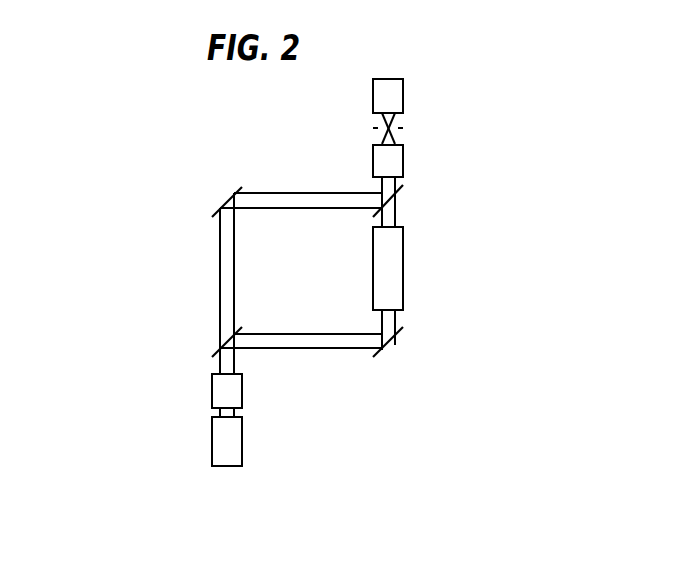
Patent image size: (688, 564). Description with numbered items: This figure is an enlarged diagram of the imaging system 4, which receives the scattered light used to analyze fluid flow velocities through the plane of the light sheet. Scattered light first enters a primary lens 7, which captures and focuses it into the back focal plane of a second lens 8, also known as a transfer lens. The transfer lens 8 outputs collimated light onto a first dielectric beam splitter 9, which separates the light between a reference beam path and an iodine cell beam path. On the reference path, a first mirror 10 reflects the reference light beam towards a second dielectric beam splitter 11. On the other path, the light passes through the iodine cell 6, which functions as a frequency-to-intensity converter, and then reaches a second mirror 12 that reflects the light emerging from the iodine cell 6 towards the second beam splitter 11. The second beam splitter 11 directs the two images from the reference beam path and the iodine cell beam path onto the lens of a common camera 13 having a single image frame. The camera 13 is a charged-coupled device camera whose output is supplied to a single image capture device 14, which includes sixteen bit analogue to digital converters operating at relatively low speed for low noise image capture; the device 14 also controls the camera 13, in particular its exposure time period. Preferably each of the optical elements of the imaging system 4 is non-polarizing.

The imaging system 4 is at (143, 176).
The iodine cell 6 is at (393, 269).
The primary lens 7 is at (393, 97).
The second lens 8 is at (390, 161).
The first dielectric beam splitter 9 is at (397, 202).
The first mirror 10 is at (230, 193).
The second dielectric beam splitter 11 is at (217, 350).
The second mirror 12 is at (390, 346).
The camera 13 is at (215, 394).
The image capture device 14 is at (223, 440).